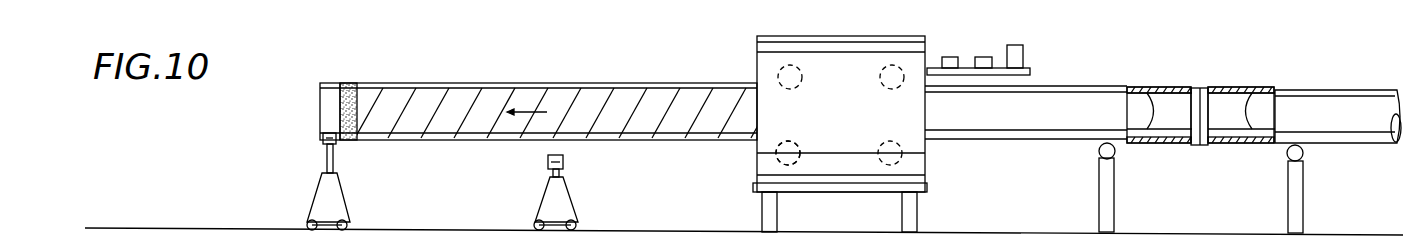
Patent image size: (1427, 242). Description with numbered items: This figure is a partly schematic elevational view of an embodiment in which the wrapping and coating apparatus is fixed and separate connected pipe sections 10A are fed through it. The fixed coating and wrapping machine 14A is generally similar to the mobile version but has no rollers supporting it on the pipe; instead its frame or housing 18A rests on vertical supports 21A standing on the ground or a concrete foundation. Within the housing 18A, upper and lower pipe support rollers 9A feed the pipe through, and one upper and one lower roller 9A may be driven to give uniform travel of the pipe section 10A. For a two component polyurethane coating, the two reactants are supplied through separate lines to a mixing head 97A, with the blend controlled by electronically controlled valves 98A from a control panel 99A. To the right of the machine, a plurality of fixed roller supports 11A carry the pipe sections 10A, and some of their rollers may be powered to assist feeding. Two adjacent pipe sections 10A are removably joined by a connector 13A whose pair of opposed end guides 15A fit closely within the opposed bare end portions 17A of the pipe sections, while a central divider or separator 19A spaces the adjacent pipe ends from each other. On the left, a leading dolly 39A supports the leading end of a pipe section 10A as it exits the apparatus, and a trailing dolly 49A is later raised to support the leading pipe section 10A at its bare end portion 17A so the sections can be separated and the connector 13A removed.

The pipe section 10A is at (430, 82).
The coating and wrapping machine 14A is at (740, 56).
The pipe support rollers 9A is at (880, 78).
The frame or housing 18A is at (775, 143).
The vertical supports 21A is at (760, 213).
The mixing head 97A is at (952, 64).
The electronically controlled valves 98A is at (985, 62).
The control panel 99A is at (1025, 53).
The end guides 15A is at (1133, 113).
The bare end portions 17A is at (1173, 87).
The connector 13A is at (1194, 146).
The central divider or separator 19A is at (1202, 132).
The fixed roller supports 11A is at (1116, 201).
The leading dolly 39A is at (318, 193).
The trailing dolly 49A is at (545, 195).